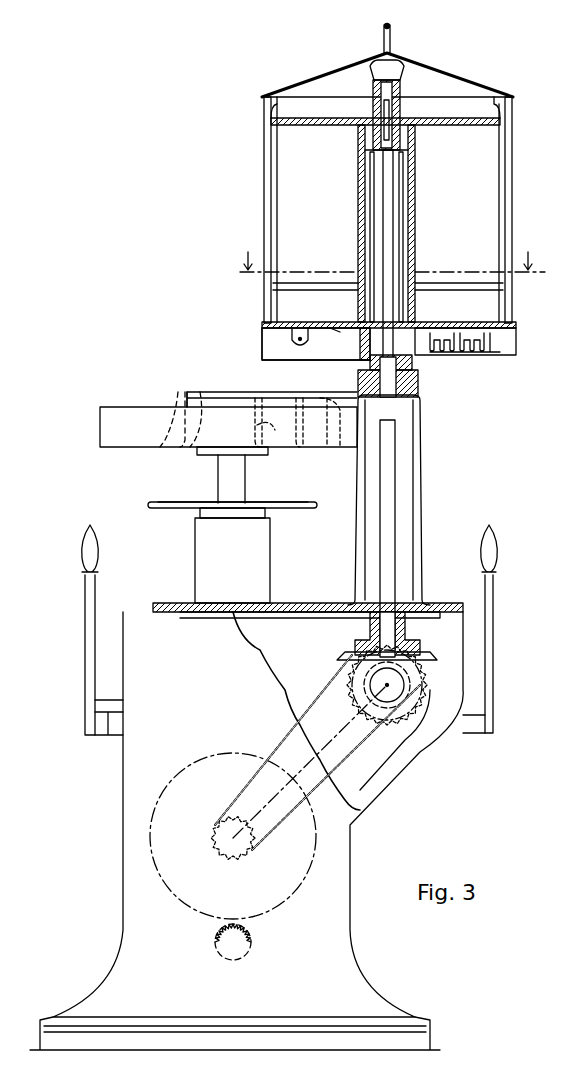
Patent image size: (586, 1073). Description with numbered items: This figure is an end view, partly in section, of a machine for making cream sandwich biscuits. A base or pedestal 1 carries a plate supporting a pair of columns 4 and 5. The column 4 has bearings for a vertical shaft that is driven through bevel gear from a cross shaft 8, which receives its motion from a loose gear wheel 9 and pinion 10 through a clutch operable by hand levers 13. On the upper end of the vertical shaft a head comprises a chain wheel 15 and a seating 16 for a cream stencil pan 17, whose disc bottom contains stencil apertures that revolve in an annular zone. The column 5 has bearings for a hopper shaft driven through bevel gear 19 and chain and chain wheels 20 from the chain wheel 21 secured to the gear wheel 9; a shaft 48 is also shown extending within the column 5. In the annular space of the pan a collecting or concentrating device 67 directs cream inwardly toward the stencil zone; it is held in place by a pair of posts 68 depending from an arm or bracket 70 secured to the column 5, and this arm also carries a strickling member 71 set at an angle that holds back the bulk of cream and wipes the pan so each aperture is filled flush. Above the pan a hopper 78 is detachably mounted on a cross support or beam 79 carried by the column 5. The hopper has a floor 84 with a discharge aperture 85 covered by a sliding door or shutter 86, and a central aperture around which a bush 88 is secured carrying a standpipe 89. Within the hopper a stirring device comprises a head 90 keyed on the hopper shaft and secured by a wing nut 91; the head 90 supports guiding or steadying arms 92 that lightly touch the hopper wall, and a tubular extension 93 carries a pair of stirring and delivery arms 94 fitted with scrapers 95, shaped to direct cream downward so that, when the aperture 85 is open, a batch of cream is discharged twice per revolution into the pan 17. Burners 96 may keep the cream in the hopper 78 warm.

The base or pedestal 1 is at (246, 826).
The column 4 is at (203, 547).
The column 5 is at (421, 470).
The cross shaft 8 is at (391, 268).
The loose gear wheel 9 is at (312, 850).
The pinion 10 is at (233, 942).
The hand levers 13 is at (96, 585).
The chain wheel 15 is at (180, 505).
The seating 16 is at (230, 455).
The cream stencil pan 17 is at (128, 420).
The bevel gear 19 is at (438, 660).
The chain and chain wheels 20 is at (388, 720).
The chain wheel 21 is at (215, 838).
The shaft 48 is at (396, 440).
The collecting or concentrating device 67 is at (260, 402).
The posts 68 is at (298, 445).
The arm or bracket 70 is at (322, 412).
The strickling member 71 is at (170, 407).
The hopper 78 is at (511, 196).
The cross support or beam 79 is at (418, 383).
The floor 84 is at (500, 326).
The discharge aperture 85 is at (300, 330).
The sliding door or shutter 86 is at (266, 338).
The bush 88 is at (396, 326).
The standpipe 89 is at (403, 168).
The head 90 is at (372, 97).
The wing nut 91 is at (395, 70).
The guiding or steadying arms 92 is at (460, 117).
The tubular extension 93 is at (357, 140).
The stirring and delivery arms 94 is at (290, 302).
The scrapers 95 is at (275, 206).
The burners 96 is at (490, 353).